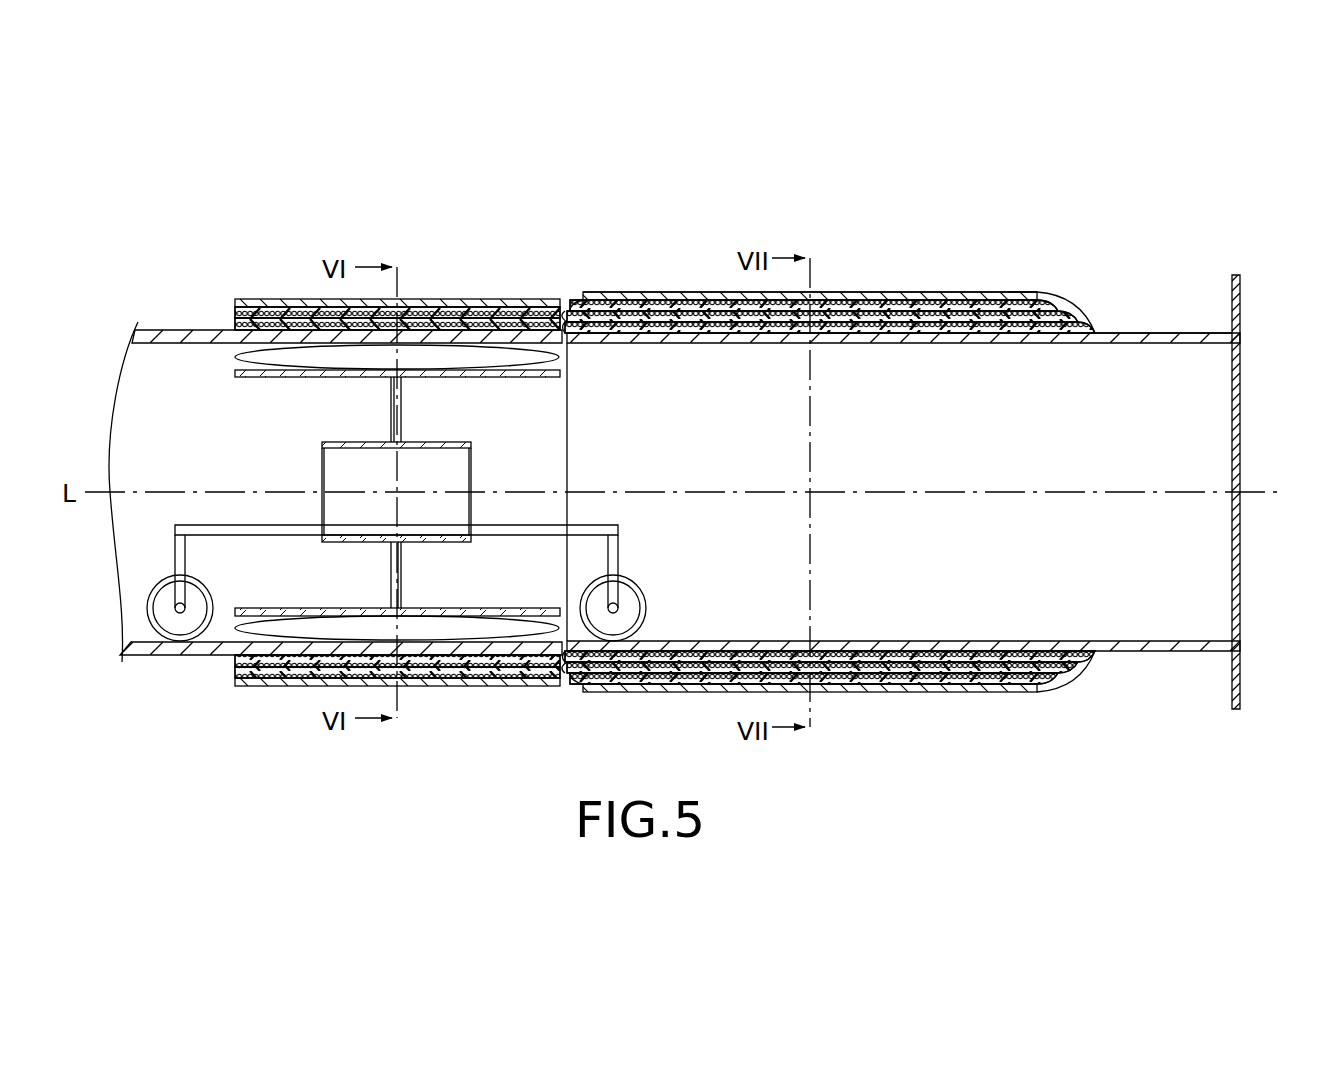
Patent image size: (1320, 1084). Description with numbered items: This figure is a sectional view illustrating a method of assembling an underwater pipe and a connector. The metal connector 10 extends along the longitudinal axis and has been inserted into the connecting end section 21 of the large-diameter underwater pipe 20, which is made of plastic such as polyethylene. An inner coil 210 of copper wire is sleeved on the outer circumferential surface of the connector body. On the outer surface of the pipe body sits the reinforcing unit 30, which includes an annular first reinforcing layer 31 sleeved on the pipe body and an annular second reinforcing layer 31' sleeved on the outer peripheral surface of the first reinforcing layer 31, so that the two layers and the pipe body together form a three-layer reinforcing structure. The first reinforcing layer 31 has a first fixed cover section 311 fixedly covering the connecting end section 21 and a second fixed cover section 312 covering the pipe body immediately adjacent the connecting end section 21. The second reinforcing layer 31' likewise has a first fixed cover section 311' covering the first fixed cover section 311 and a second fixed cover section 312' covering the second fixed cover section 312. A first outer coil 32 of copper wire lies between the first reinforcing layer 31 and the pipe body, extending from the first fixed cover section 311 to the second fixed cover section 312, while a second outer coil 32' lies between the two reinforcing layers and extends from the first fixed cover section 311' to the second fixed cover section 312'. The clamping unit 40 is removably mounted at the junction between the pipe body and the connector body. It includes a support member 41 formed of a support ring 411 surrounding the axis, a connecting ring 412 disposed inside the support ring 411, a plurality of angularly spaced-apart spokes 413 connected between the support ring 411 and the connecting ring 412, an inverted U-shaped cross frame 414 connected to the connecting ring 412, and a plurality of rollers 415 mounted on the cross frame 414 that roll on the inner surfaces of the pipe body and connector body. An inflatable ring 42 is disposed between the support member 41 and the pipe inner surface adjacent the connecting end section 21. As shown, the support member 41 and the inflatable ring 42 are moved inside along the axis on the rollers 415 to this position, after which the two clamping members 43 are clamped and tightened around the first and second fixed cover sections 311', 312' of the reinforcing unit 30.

The connector 10 is at (1147, 330).
The large-diameter underwater pipe 20 is at (163, 328).
The connecting end section 21 is at (1095, 325).
The inner coil 210 is at (1008, 292).
The reinforcing unit 30 is at (830, 434).
The first reinforcing layer 31 is at (814, 444).
The second reinforcing layer 31' is at (822, 430).
The first fixed cover section 311 is at (830, 421).
The first fixed cover section 311' is at (1030, 434).
The second fixed cover section 312 is at (397, 439).
The second fixed cover section 312' is at (382, 445).
The first outer coil 32 is at (810, 460).
The second outer coil 32' is at (810, 243).
The clamping unit 40 is at (447, 437).
The support member 41 is at (403, 393).
The support ring 411 is at (560, 373).
The connecting ring 412 is at (471, 447).
The spokes 413 is at (403, 421).
The cross frame 414 is at (613, 558).
The rollers 415 is at (646, 604).
The inflatable ring 42 is at (480, 355).
The clamping members 43 is at (424, 303).